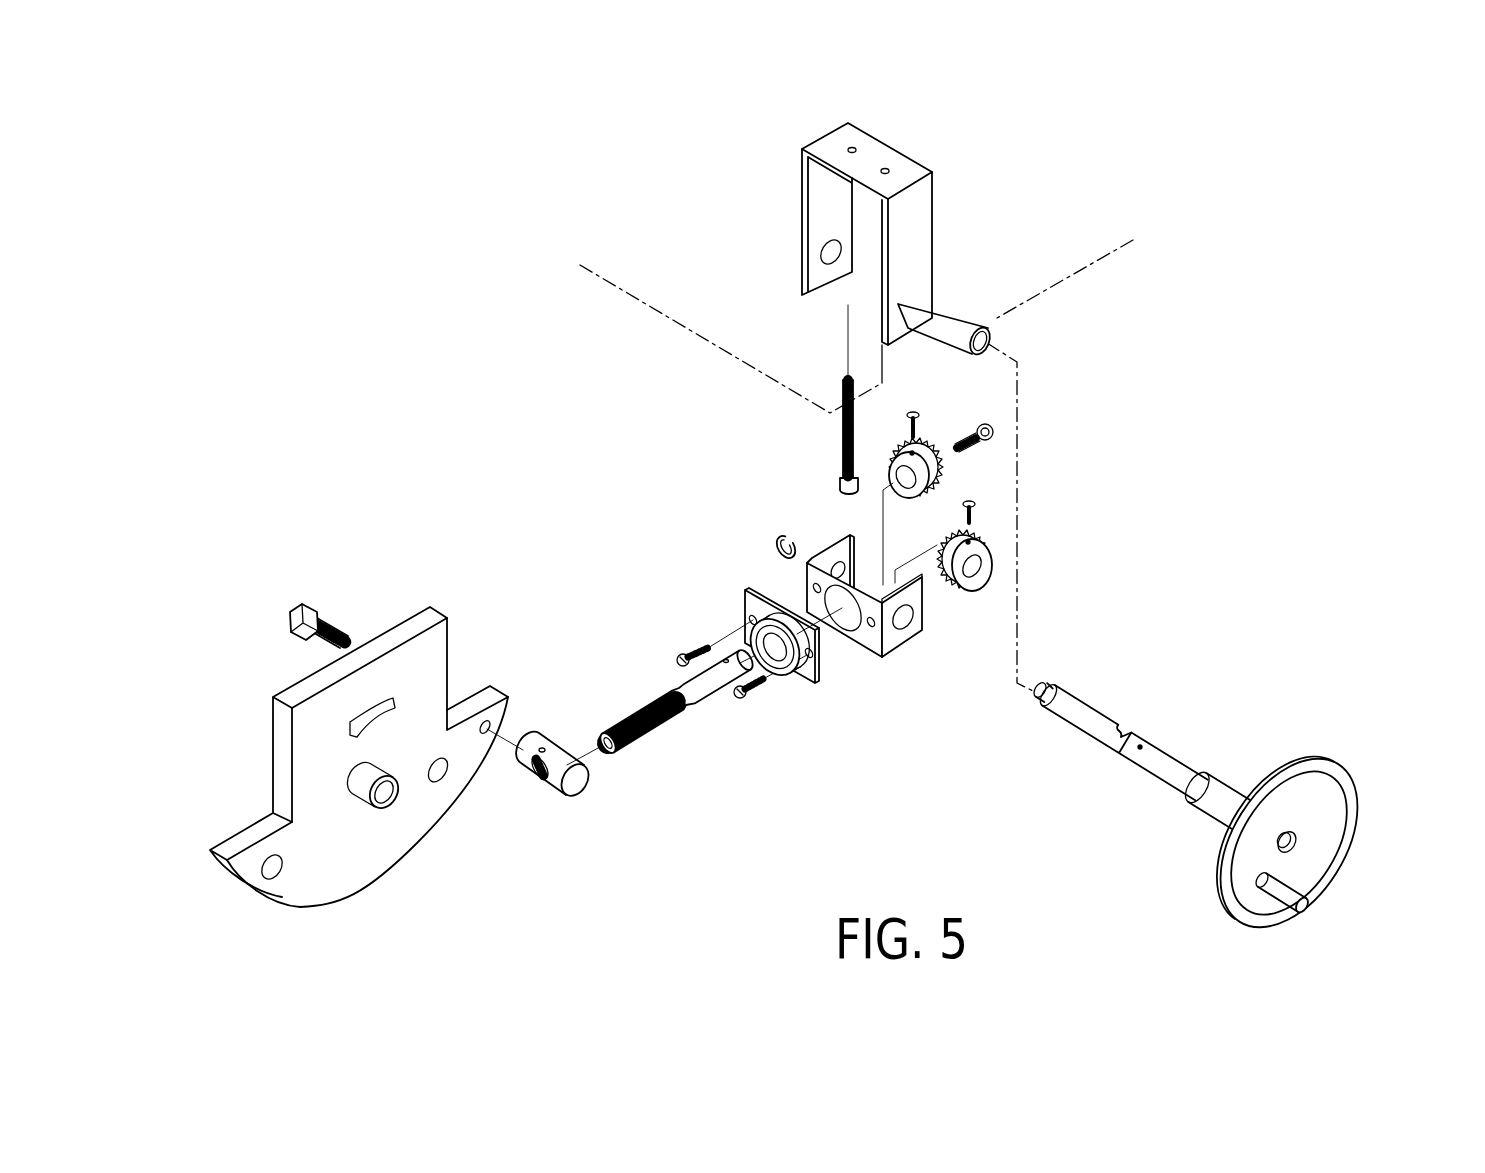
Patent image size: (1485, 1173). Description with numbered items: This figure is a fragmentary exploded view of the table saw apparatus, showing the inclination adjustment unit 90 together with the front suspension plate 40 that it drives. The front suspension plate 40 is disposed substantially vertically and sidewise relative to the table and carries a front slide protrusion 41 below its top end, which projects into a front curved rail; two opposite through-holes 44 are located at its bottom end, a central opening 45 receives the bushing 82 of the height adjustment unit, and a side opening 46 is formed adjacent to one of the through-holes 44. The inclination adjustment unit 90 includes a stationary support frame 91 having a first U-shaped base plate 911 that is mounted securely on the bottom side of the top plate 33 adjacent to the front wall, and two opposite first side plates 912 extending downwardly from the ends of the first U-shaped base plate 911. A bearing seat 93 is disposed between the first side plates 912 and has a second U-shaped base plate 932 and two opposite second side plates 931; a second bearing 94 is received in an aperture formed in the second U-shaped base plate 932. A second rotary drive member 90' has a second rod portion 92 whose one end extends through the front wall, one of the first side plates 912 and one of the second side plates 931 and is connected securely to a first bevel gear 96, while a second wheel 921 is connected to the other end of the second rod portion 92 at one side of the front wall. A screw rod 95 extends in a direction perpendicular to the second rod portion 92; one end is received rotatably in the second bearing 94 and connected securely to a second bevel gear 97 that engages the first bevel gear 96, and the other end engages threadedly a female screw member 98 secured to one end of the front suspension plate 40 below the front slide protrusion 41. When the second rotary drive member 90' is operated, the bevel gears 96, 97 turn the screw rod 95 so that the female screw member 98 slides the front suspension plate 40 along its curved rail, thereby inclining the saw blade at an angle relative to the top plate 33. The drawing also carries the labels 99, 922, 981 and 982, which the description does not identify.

The top plate 33 is at (648, 290).
The front suspension plate 40 is at (359, 711).
The front slide protrusion 41 is at (357, 718).
The through-holes 44 is at (438, 772).
The central opening 45 is at (363, 773).
The side opening 46 is at (485, 725).
The bushing 82 is at (365, 798).
The bolt 99 is at (302, 604).
The female screw member 98 is at (547, 776).
The threaded hole 981 is at (540, 783).
The screw hole 982 is at (547, 743).
The screw rod 95 is at (640, 740).
The second bearing 94 is at (797, 670).
The bearing seat 93 is at (865, 548).
The second side plates 931 is at (892, 637).
The second U-shaped base plate 932 is at (868, 643).
The retaining ring 922 is at (785, 540).
The first bevel gear 96 is at (990, 557).
The second bevel gear 97 is at (943, 472).
The stationary support frame 91 is at (869, 237).
The first U-shaped base plate 911 is at (878, 152).
The first side plates 912 is at (823, 197).
The second rod portion 92 is at (1148, 750).
The inclination adjustment unit 90 is at (1321, 782).
The second rotary drive member 90' is at (1121, 803).
The second wheel 921 is at (1333, 862).